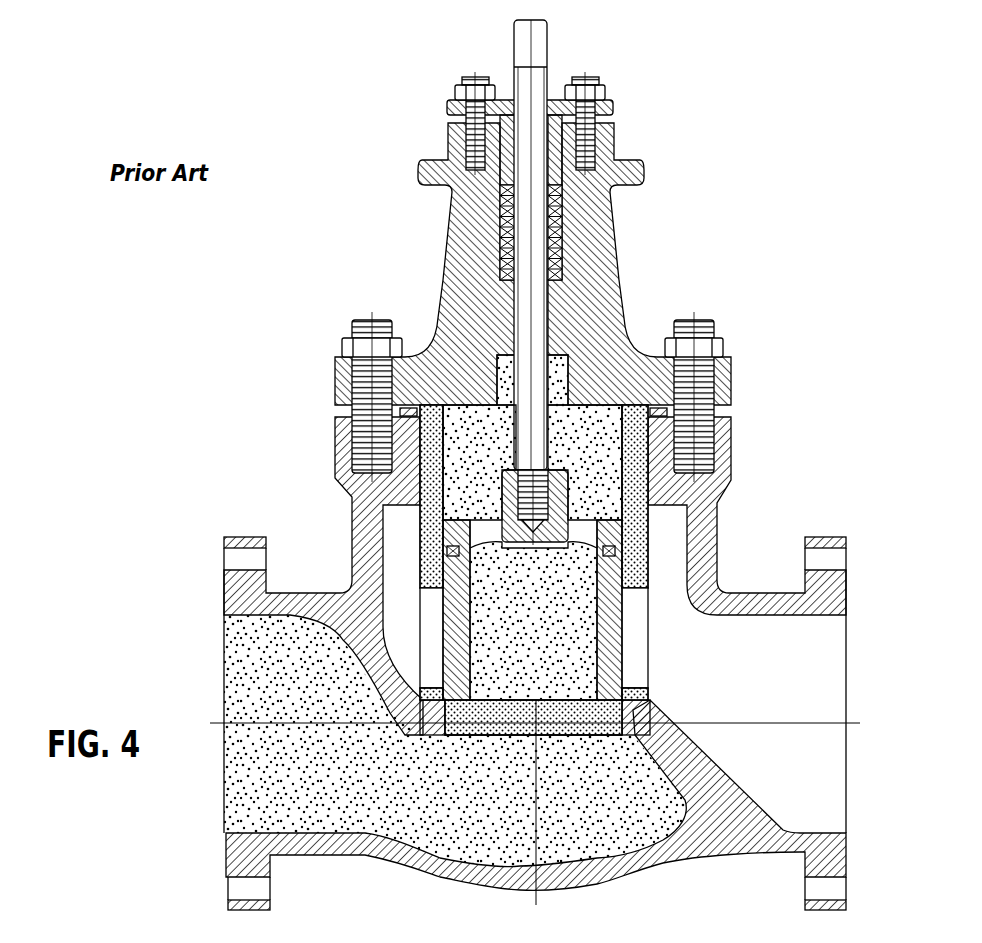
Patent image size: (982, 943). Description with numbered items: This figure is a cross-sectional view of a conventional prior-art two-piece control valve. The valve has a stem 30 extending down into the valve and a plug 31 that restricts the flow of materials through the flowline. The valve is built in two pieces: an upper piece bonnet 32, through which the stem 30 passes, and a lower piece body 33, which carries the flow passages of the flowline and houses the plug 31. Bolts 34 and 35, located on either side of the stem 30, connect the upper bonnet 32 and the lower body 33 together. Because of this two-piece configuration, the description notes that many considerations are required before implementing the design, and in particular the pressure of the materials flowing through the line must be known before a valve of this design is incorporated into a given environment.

The stem 30 is at (550, 42).
The plug 31 is at (625, 620).
The upper piece bonnet 32 is at (613, 227).
The lower piece body 33 is at (832, 583).
The bolt 34 is at (350, 325).
The bolt 35 is at (727, 340).